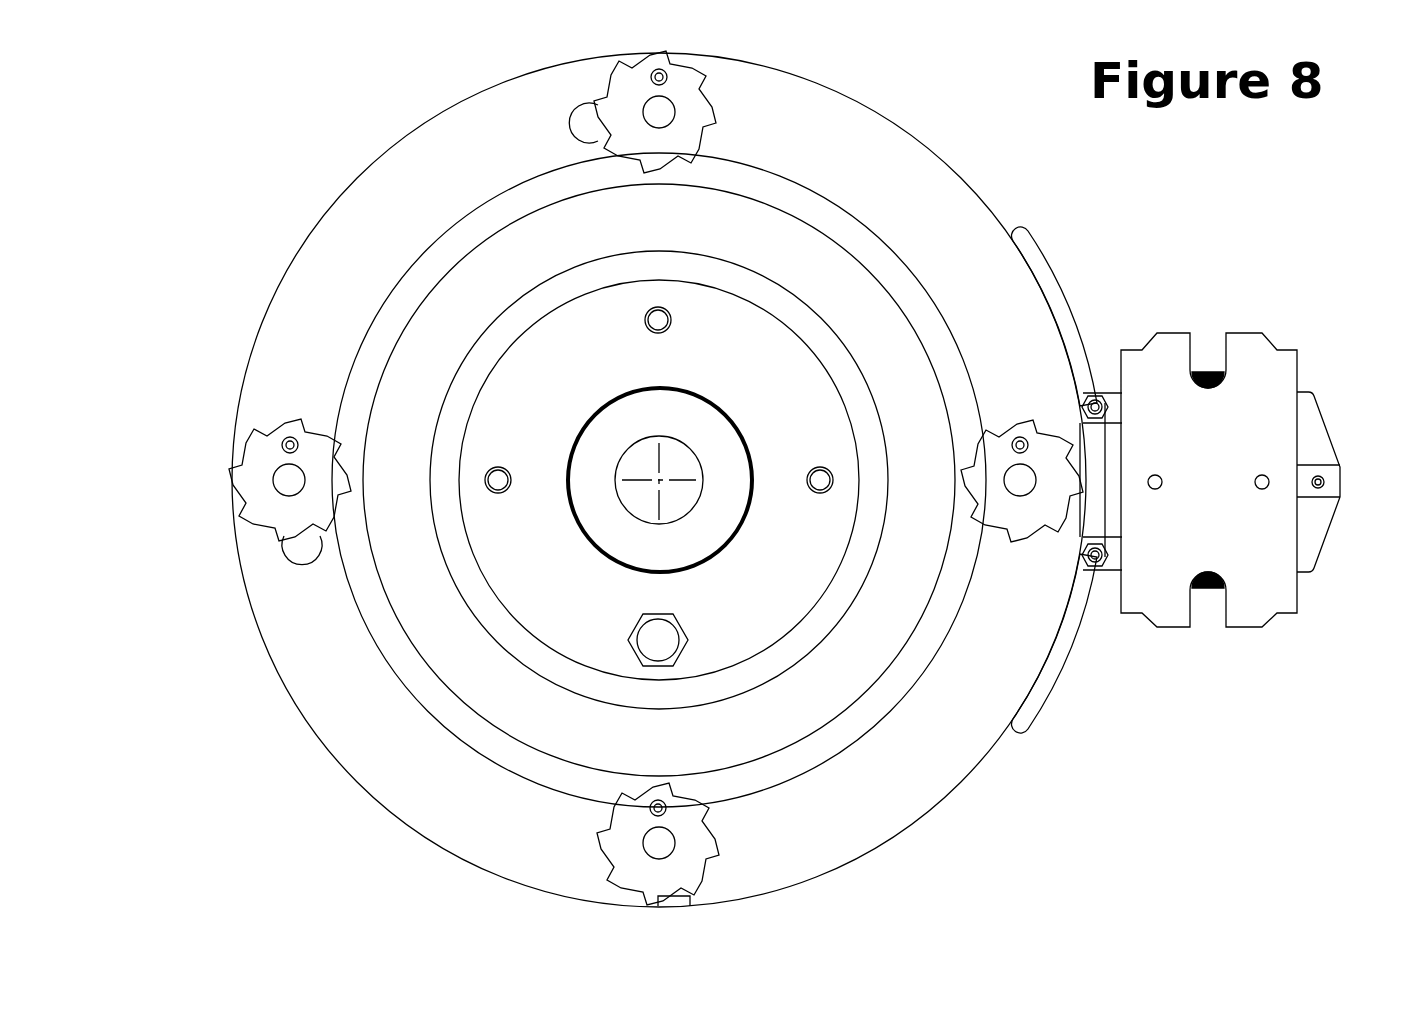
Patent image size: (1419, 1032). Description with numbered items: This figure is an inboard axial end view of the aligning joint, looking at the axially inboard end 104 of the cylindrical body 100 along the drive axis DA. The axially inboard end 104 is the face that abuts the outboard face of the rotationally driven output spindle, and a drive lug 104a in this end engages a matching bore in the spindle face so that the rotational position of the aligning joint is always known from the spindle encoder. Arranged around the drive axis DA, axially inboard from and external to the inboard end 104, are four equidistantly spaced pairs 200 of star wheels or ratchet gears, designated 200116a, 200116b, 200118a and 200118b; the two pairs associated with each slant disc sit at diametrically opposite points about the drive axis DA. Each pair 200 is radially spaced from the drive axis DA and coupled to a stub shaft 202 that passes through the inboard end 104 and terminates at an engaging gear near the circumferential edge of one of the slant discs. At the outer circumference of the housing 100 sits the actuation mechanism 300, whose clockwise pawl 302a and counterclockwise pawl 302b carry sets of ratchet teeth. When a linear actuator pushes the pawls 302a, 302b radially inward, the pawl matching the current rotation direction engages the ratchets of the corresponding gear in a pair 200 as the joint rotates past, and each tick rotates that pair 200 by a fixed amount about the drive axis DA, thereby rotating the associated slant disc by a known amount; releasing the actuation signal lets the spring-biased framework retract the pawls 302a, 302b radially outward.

The cylindrical body 100 is at (702, 480).
The axially inboard end 104 is at (571, 561).
The drive lug 104a is at (804, 771).
The drive axis DA is at (820, 317).
The pair of star wheels or ratchet gears 200 is at (691, 482).
The pair of star wheels or ratchet gears 200118b is at (558, 98).
The pair of star wheels or ratchet gears 200116b is at (248, 400).
The pair of star wheels or ratchet gears 200116a is at (1099, 559).
The pair of star wheels or ratchet gears 200118a is at (564, 861).
The stub shaft 202 is at (676, 476).
The actuation mechanism 300 is at (1257, 431).
The clockwise pawl 302a is at (1150, 674).
The counterclockwise pawl 302b is at (1133, 375).